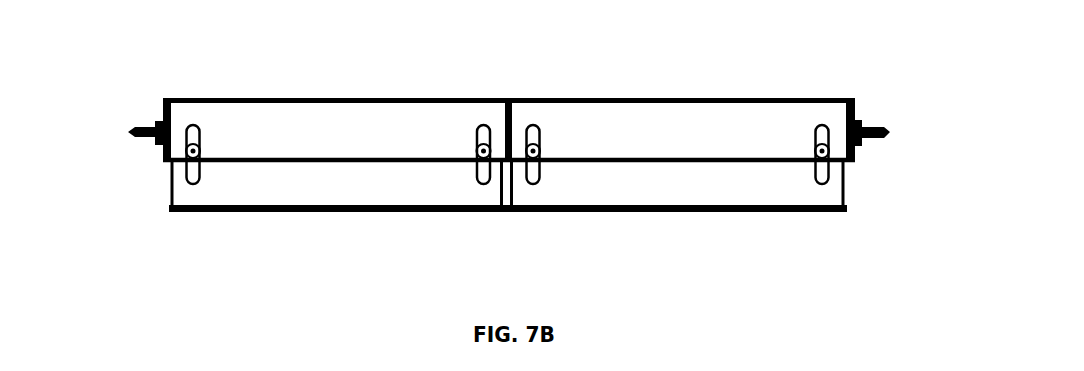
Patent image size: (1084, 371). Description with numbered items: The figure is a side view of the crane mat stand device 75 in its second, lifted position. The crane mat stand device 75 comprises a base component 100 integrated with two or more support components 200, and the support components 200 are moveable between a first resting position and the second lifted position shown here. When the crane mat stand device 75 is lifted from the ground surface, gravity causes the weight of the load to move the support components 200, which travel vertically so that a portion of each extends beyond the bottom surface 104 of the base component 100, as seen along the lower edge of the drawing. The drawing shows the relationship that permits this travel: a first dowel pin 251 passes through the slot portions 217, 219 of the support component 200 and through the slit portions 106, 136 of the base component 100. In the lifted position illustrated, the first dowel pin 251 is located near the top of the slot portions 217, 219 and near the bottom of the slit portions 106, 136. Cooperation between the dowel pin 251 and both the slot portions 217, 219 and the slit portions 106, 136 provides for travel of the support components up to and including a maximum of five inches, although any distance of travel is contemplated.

The crane mat stand device 75 is at (70, 41).
The base component 100 is at (677, 136).
The bottom surface 104 is at (352, 162).
The slit portion 106 is at (195, 133).
The slit portion 136 is at (160, 218).
The support component 200 is at (812, 192).
The slot portion 217 is at (195, 170).
The slot portion 219 is at (193, 154).
The first dowel pin 251 is at (197, 148).